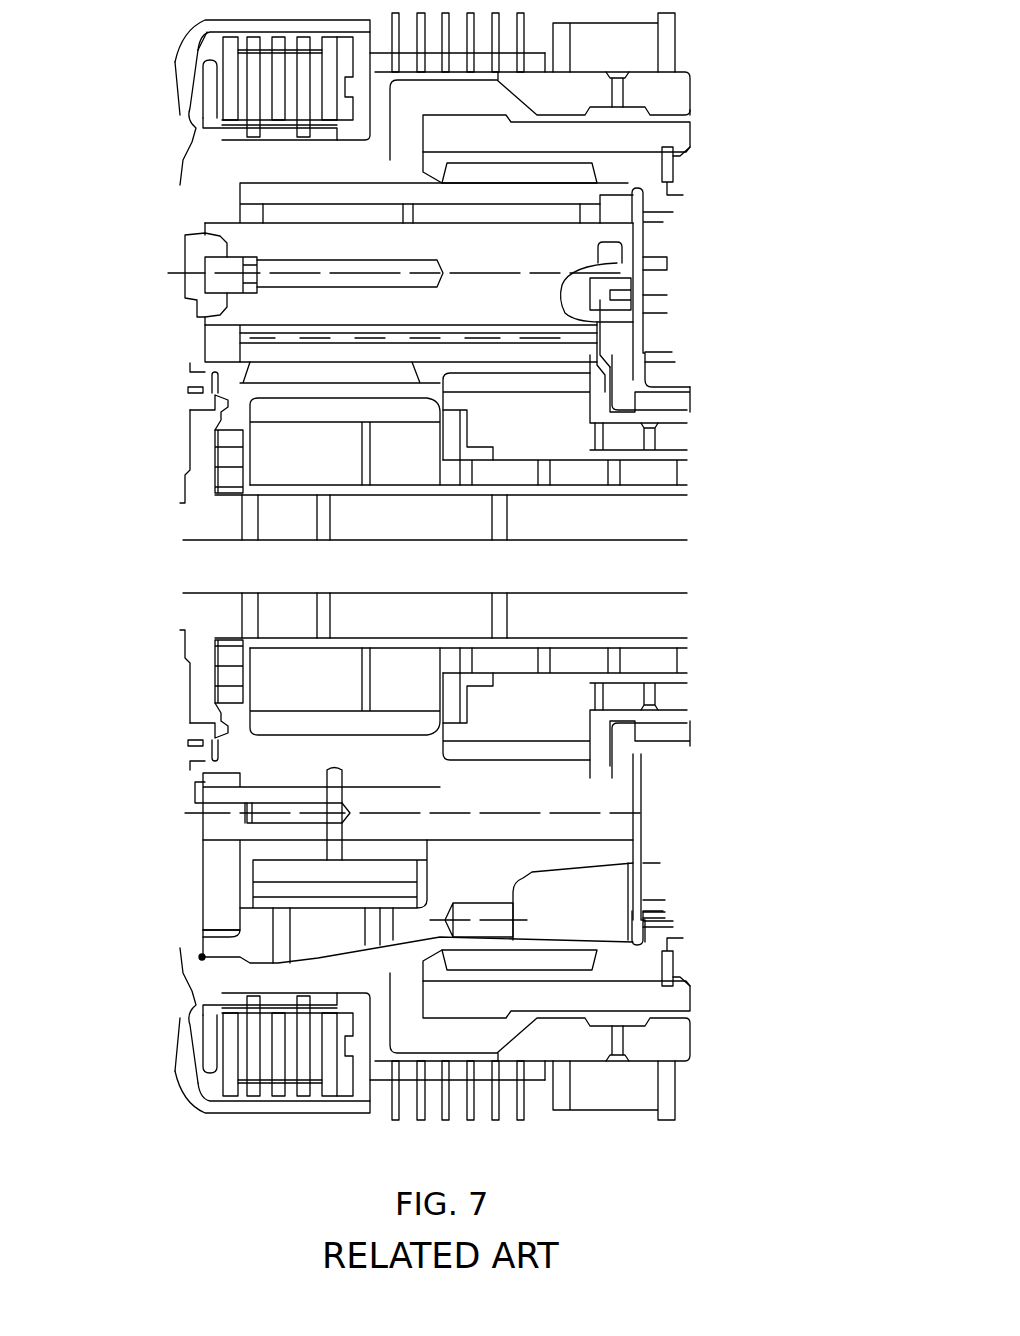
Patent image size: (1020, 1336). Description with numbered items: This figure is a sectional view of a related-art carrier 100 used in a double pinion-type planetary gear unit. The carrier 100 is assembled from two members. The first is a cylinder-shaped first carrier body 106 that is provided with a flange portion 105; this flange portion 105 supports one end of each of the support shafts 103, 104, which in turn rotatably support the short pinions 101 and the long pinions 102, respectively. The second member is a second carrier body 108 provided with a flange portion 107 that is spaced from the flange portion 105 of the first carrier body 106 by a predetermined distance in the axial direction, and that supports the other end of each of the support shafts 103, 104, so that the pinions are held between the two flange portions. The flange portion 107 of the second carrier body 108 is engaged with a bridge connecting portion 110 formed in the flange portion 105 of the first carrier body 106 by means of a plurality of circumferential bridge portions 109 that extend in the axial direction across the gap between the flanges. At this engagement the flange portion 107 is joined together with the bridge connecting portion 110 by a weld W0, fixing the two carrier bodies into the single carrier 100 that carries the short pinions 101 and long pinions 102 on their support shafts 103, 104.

The carrier 100 is at (703, 93).
The short pinions 101 is at (277, 872).
The long pinions 102 is at (515, 190).
The support shafts 103 is at (597, 827).
The support shafts 104 is at (595, 233).
The flange portion 105 is at (220, 203).
The first carrier body 106 is at (192, 160).
The flange portion 107 is at (622, 347).
The second carrier body 108 is at (640, 887).
The bridge portions 109 is at (340, 935).
The bridge connecting portion 110 is at (227, 935).
The weld W0 is at (202, 957).